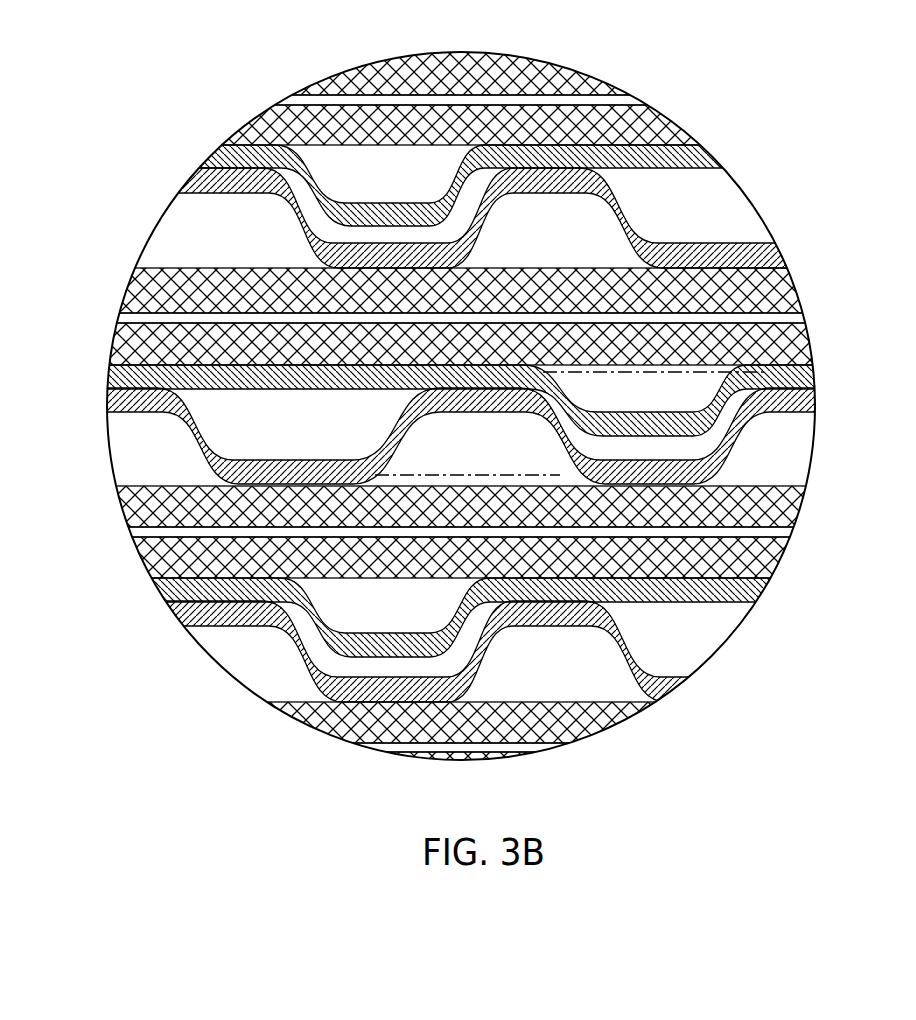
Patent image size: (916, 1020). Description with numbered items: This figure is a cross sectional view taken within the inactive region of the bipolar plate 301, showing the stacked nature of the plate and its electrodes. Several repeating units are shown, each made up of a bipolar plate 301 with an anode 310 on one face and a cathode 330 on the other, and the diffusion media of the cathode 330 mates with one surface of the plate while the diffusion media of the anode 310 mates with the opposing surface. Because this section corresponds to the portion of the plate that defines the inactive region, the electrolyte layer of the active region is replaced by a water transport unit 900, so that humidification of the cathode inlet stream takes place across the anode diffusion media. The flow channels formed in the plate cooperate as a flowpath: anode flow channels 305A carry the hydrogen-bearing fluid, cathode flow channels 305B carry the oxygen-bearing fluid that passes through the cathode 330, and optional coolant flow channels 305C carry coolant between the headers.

The cathode 330 is at (579, 69).
The water transport unit 900 is at (643, 98).
The anode 310 is at (676, 125).
The bipolar plate 301 is at (795, 142).
The anode flow channel 305A is at (347, 187).
The cathode flow channel 305B is at (187, 247).
The coolant flow channel 305C is at (655, 217).